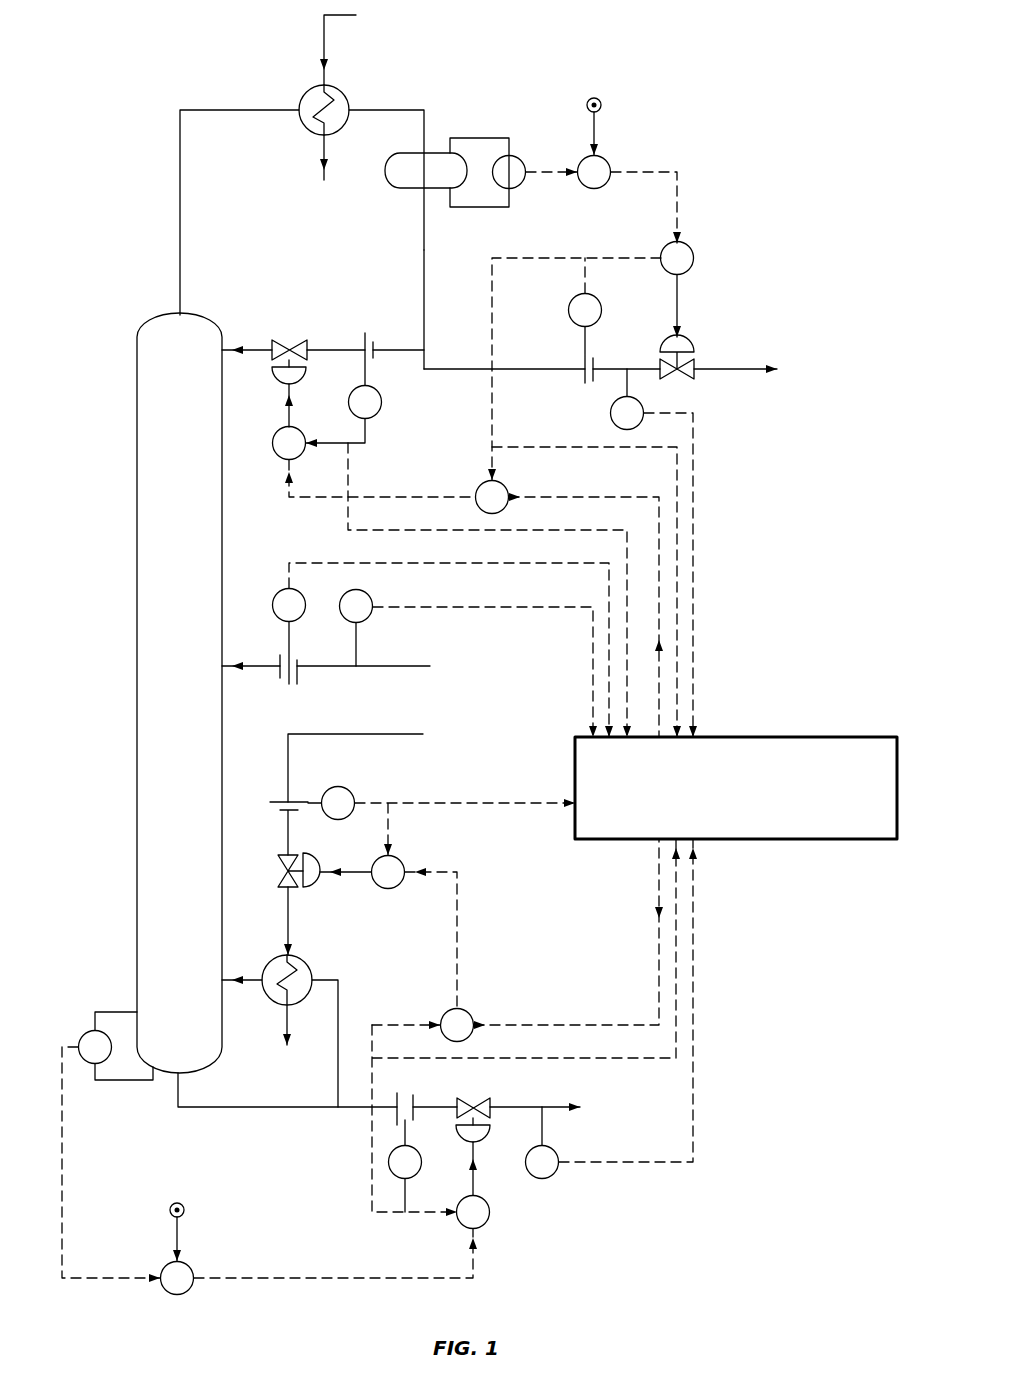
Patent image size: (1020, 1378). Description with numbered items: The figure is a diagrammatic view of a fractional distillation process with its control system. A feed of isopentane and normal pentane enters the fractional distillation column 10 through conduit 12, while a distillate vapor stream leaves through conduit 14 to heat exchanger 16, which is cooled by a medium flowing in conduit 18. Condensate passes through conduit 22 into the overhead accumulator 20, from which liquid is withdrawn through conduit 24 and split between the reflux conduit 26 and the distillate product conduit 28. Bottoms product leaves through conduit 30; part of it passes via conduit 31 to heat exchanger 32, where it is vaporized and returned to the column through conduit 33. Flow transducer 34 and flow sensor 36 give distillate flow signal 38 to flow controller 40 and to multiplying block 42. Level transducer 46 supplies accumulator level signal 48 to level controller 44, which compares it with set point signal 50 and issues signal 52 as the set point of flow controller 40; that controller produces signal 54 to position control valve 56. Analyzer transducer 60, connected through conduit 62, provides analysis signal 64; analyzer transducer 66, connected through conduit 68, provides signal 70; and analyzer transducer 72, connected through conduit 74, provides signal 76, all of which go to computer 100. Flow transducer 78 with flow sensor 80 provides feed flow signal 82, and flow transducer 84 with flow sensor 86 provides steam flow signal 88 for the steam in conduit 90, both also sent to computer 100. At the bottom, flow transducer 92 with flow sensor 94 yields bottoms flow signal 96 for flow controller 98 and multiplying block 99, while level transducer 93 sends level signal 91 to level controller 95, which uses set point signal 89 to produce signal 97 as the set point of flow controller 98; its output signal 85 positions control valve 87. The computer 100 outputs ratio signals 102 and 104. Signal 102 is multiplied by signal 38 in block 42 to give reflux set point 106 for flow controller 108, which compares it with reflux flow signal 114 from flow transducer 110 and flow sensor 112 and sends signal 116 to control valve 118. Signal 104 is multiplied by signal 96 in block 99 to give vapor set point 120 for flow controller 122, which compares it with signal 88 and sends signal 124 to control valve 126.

The fractional distillation column 10 is at (137, 495).
The feed conduit 12 is at (257, 670).
The distillate vapor conduit 14 is at (221, 110).
The heat exchanger 16 is at (346, 97).
The cooling medium conduit 18 is at (322, 46).
The overhead accumulator 20 is at (385, 182).
The condensate conduit 22 is at (409, 110).
The accumulator liquid withdrawal conduit 24 is at (422, 250).
The reflux conduit 26 is at (339, 352).
The distillate product conduit 28 is at (430, 372).
The bottoms product conduit 30 is at (225, 1110).
The reboiler feed conduit 31 is at (338, 993).
The heat exchanger 32 is at (311, 963).
The vapor return conduit 33 is at (245, 985).
The flow transducer 34 is at (602, 302).
The flow sensor 36 is at (578, 360).
The distillate flow signal 38 is at (492, 285).
The flow controller 40 is at (695, 252).
The multiplying block 42 is at (480, 486).
The liquid level controller 44 is at (608, 185).
The level transducer 46 is at (520, 158).
The accumulator level signal 48 is at (530, 178).
The set point signal 50 is at (598, 118).
The level controller output signal 52 is at (680, 180).
The flow controller output signal 54 is at (680, 300).
The control valve 56 is at (698, 363).
The analyzer transducer 60 is at (610, 413).
The sample conduit 62 is at (631, 380).
The distillate analysis signal 64 is at (695, 465).
The analyzer transducer 66 is at (370, 601).
The sample conduit 68 is at (358, 648).
The feed analysis signal 70 is at (528, 612).
The analyzer transducer 72 is at (553, 1176).
The sample conduit 74 is at (545, 1125).
The bottoms analysis signal 76 is at (660, 1165).
The flow transducer 78 is at (283, 592).
The flow sensor 80 is at (300, 679).
The feed flow signal 82 is at (300, 563).
The flow transducer 84 is at (348, 792).
The flow controller output signal 85 is at (475, 1184).
The flow sensor 86 is at (286, 792).
The control valve 87 is at (468, 1098).
The steam flow signal 88 is at (435, 803).
The set point signal 89 is at (180, 1228).
The steam conduit 90 is at (285, 835).
The column level signal 91 is at (65, 1150).
The flow transducer 92 is at (424, 1160).
The level transducer 93 is at (90, 1030).
The flow sensor 94 is at (415, 1098).
The liquid level controller 95 is at (165, 1265).
The bottoms flow signal 96 is at (372, 1160).
The level controller output signal 97 is at (322, 1278).
The flow controller 98 is at (484, 1226).
The multiplying block 99 is at (466, 1013).
The computer 100 is at (778, 737).
The reflux to distillate ratio signal 102 is at (565, 475).
The steam to bottoms ratio signal 104 is at (657, 897).
The reflux flow set point signal 106 is at (400, 497).
The flow controller 108 is at (285, 462).
The flow transducer 110 is at (380, 415).
The flow sensor 112 is at (362, 333).
The reflux flow signal 114 is at (348, 530).
The flow controller output signal 116 is at (287, 415).
The control valve 118 is at (286, 338).
The vapor flow set point signal 120 is at (458, 895).
The flow controller 122 is at (403, 863).
The flow controller output signal 124 is at (359, 877).
The control valve 126 is at (276, 880).